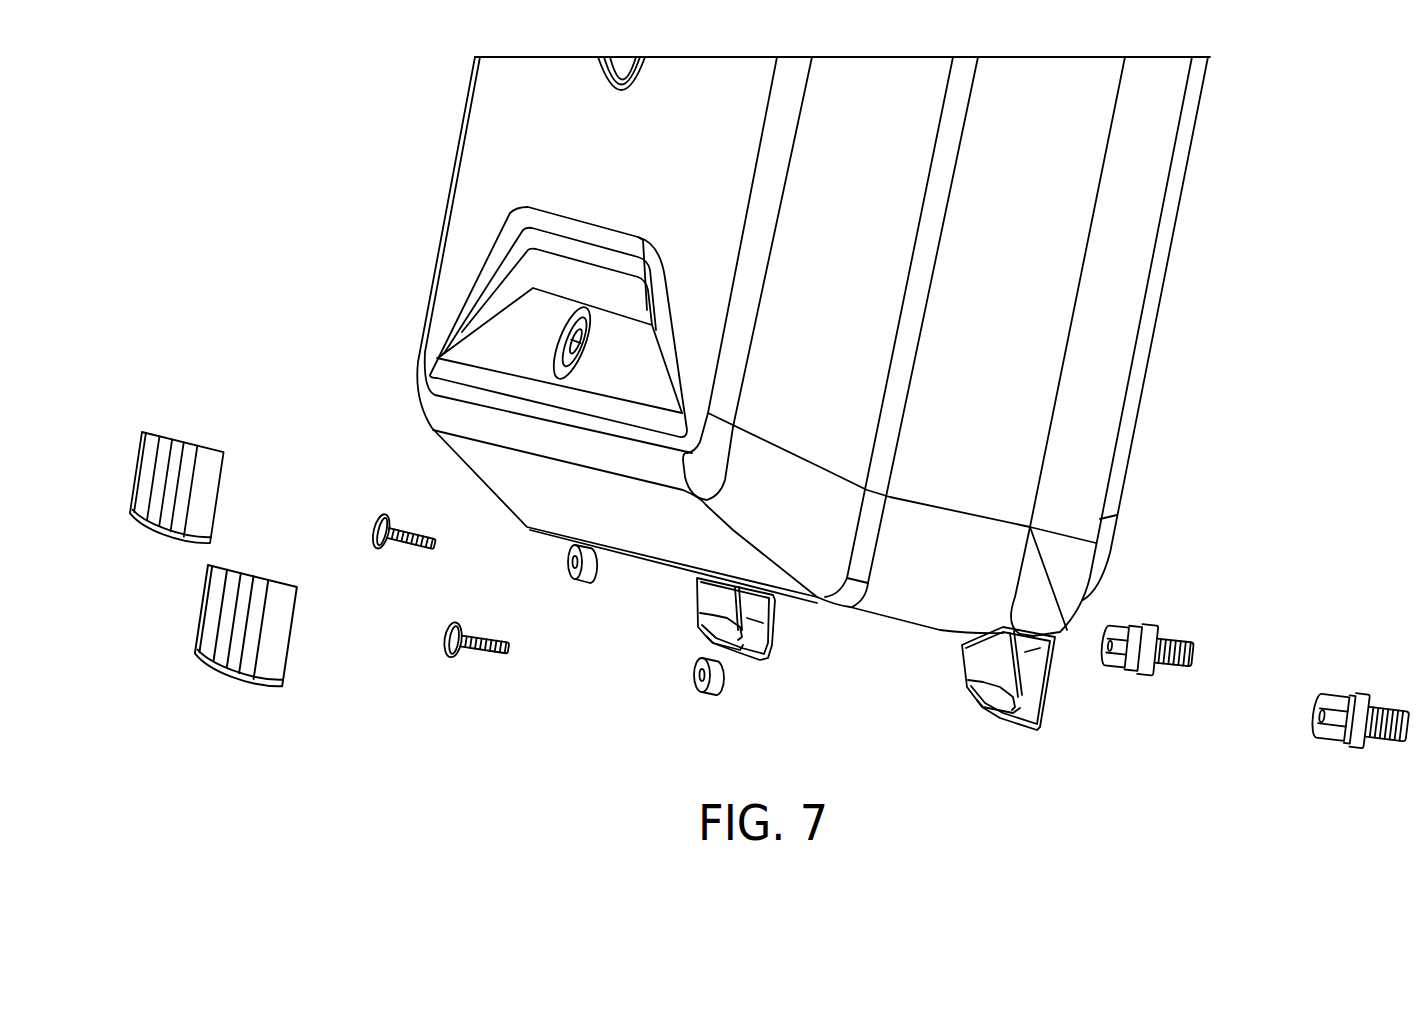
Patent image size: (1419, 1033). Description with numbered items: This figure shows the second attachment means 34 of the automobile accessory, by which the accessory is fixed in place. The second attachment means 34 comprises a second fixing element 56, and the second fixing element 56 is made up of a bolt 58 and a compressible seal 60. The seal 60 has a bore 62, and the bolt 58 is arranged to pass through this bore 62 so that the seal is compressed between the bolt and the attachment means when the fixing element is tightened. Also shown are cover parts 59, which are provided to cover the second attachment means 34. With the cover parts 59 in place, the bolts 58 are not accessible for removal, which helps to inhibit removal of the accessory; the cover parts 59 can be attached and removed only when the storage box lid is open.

The second attachment means 34 is at (745, 690).
The second fixing element 56 is at (362, 495).
The bolt 58 is at (483, 655).
The cover parts 59 is at (248, 673).
The compressible seal 60 is at (1355, 743).
The bore 62 is at (1313, 702).